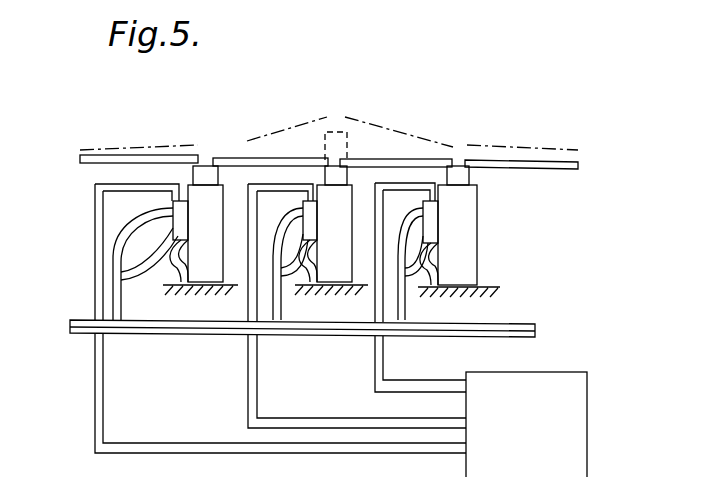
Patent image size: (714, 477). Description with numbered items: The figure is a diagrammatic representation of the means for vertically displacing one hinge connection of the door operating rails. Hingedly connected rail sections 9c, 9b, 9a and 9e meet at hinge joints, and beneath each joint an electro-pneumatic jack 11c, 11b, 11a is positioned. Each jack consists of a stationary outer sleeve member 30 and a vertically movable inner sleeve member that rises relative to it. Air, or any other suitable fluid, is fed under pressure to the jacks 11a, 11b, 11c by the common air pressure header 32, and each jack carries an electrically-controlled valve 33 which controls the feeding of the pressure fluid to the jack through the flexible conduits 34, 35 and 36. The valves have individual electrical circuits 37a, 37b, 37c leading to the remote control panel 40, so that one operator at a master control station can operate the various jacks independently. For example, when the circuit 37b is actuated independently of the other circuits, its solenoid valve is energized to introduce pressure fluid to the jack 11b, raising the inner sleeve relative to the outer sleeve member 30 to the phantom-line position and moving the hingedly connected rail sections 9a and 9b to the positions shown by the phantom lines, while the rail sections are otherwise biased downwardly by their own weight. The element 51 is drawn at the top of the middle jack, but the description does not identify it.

The rail section 9a is at (377, 162).
The rail section 9b is at (233, 161).
The rail section 9c is at (125, 158).
The rail section 9e is at (510, 163).
The electro-pneumatic jack 11a is at (458, 252).
The electro-pneumatic jack 11b is at (330, 268).
The electro-pneumatic jack 11c is at (174, 238).
The stationary outer sleeve member 30 is at (346, 288).
The common air pressure header 32 is at (449, 334).
The electrically-controlled valve 33 is at (180, 209).
The flexible conduit 34 is at (117, 294).
The flexible conduit 35 is at (153, 248).
The flexible conduit 36 is at (132, 268).
The electrical circuit 37a is at (375, 384).
The electrical circuit 37b is at (250, 380).
The electrical circuit 37c is at (95, 375).
The remote control panel 40 is at (587, 397).
The jack head 51 is at (330, 176).